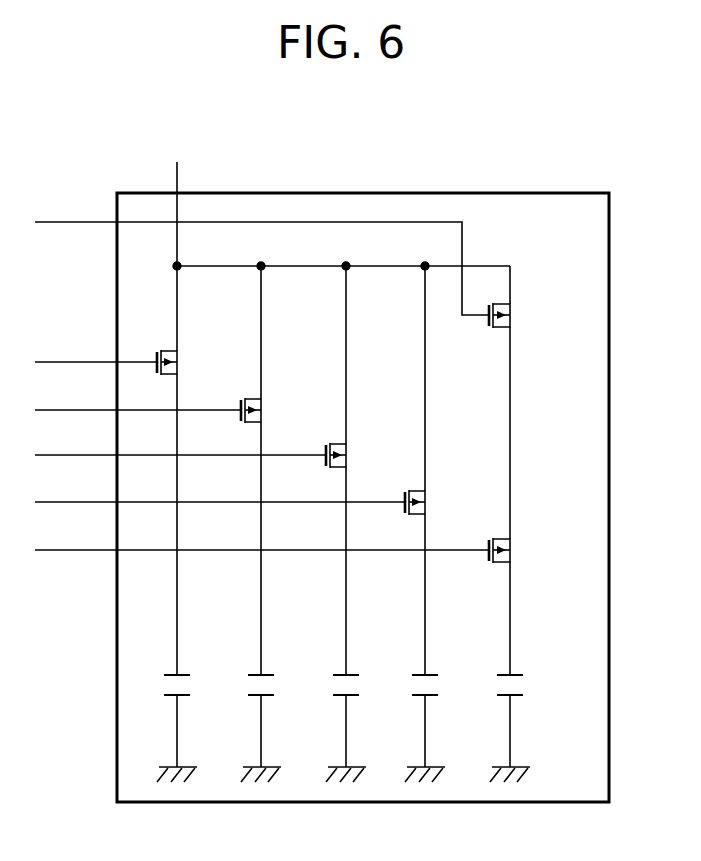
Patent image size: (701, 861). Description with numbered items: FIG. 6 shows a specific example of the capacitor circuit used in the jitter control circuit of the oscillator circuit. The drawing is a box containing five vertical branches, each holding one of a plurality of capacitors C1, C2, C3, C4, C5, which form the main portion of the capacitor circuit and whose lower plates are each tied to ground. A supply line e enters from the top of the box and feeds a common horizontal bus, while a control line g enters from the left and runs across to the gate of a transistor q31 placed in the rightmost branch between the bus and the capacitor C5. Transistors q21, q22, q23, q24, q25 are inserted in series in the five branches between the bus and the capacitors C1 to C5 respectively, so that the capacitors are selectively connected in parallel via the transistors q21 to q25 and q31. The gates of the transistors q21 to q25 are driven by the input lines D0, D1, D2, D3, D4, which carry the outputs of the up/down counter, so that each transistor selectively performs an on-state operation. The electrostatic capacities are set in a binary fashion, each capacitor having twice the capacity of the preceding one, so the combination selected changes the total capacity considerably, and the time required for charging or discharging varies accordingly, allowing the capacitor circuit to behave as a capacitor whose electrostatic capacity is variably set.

The power supply line e is at (191, 209).
The gate control line g is at (262, 243).
The transistor q21 is at (197, 321).
The transistor q22 is at (281, 344).
The transistor q23 is at (364, 367).
The transistor q24 is at (446, 391).
The transistor q25 is at (529, 445).
The transistor q31 is at (530, 297).
The data input line D0 is at (96, 346).
The data input line D1 is at (138, 394).
The data input line D2 is at (180, 439).
The data input line D3 is at (220, 486).
The data input line D4 is at (262, 534).
The capacitor C1 is at (192, 578).
The capacitor C2 is at (275, 602).
The capacitor C3 is at (360, 624).
The capacitor C4 is at (440, 648).
The capacitor C5 is at (524, 672).